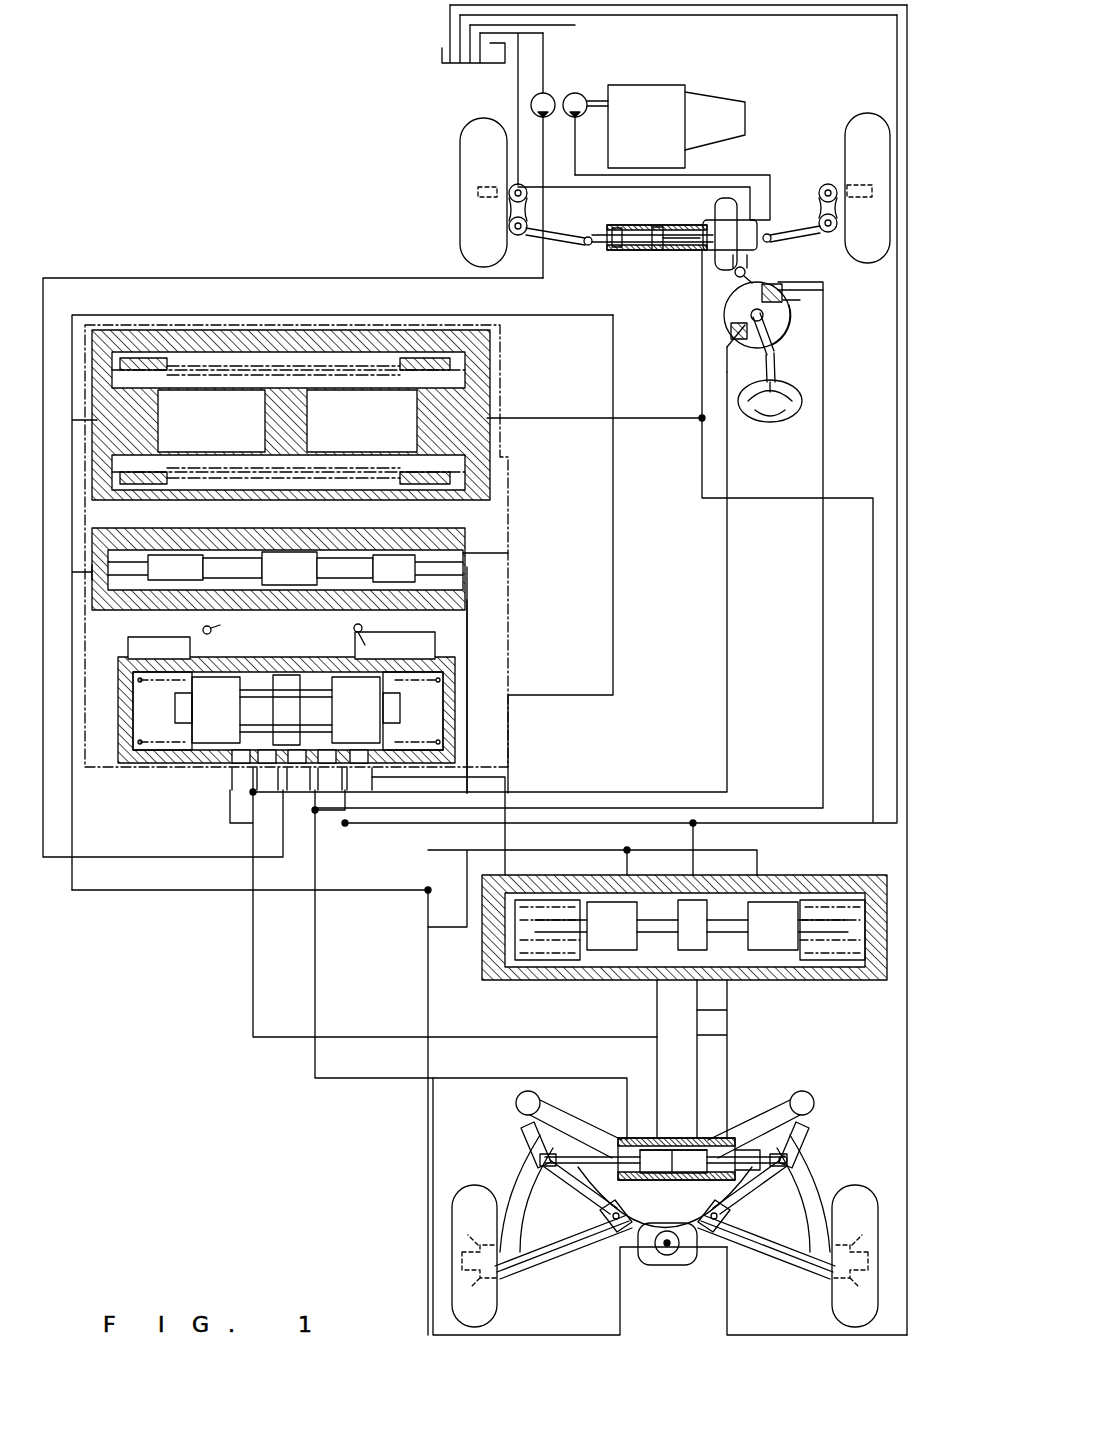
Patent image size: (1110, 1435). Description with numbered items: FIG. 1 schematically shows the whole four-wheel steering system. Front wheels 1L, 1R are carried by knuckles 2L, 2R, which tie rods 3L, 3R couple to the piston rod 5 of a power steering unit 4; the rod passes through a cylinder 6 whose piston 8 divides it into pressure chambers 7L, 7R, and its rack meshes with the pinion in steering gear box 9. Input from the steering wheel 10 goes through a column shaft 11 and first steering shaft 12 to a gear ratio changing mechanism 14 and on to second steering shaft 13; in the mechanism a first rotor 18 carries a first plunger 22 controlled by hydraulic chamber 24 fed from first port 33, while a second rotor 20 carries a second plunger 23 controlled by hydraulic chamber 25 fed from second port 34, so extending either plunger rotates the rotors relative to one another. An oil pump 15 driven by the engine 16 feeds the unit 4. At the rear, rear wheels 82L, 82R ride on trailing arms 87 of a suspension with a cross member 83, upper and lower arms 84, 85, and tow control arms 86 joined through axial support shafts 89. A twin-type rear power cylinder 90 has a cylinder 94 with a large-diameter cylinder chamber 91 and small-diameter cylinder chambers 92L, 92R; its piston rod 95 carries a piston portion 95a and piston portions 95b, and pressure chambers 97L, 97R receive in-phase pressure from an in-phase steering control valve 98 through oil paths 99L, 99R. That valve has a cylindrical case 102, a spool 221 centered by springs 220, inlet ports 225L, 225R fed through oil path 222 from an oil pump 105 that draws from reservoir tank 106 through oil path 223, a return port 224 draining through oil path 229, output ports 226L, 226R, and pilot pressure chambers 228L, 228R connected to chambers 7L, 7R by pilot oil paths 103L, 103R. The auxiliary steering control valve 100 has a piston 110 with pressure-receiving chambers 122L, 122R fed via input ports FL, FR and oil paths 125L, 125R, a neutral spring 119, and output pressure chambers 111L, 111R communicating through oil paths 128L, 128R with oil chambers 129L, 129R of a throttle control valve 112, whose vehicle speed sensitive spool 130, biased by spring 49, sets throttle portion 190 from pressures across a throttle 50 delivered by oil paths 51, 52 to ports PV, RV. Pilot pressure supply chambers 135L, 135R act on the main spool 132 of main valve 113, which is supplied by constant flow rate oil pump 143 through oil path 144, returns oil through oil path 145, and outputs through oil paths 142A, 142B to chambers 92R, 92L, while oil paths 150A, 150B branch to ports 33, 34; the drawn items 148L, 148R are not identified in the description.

The left front wheel 1L is at (460, 156).
The right front wheel 1R is at (860, 113).
The knuckle 2L is at (509, 212).
The knuckle 2R is at (822, 184).
The tie rod 3L is at (585, 235).
The tie rod 3R is at (810, 230).
The power steering unit 4 is at (762, 175).
The piston rod 5 is at (600, 245).
The cylinder 6 is at (635, 250).
The left pressure chamber 7L is at (625, 225).
The right pressure chamber 7R is at (658, 250).
The piston 8 is at (660, 262).
The steering gear box 9 is at (726, 198).
The steering wheel 10 is at (770, 422).
The column shaft 11 is at (776, 375).
The first steering shaft 12 is at (775, 340).
The second steering shaft 13 is at (765, 268).
The gear ratio changing mechanism 14 is at (792, 310).
The oil pump 15 is at (582, 94).
The engine 16 is at (660, 85).
The first rotor 18 is at (790, 328).
The second rotor 20 is at (730, 304).
The first plunger 22 is at (731, 330).
The second plunger 23 is at (790, 298).
The hydraulic chamber 24 is at (740, 340).
The hydraulic chamber 25 is at (790, 282).
The first port 33 is at (727, 370).
The second port 34 is at (778, 285).
The spring 49 is at (112, 610).
The throttle 50 is at (420, 905).
The oil path 51 is at (470, 678).
The oil path 52 is at (118, 890).
The left rear wheel 82L is at (492, 1305).
The right rear wheel 82R is at (838, 1305).
The cross member 83 is at (760, 1150).
The upper arm 84 is at (610, 1230).
The lower arm 85 is at (540, 1262).
The tow control arm 86 is at (525, 1135).
The trailing arm 87 is at (505, 1178).
The axial support shaft 89 is at (528, 1150).
The rear power cylinder 90 is at (777, 1155).
The large-diameter cylinder chamber 91 is at (695, 1138).
The small-diameter cylinder chamber 92L is at (615, 1165).
The small-diameter cylinder chamber 92R is at (755, 1168).
The cylinder 94 is at (665, 1197).
The piston rod 95 is at (600, 1140).
The piston portion 95a is at (700, 1148).
The piston portion 95b is at (640, 1148).
The left pressure chamber 97L is at (595, 1192).
The right pressure chamber 97R is at (738, 1192).
The in-phase steering control valve 98 is at (515, 980).
The oil path 99L is at (657, 1035).
The oil path 99R is at (710, 1035).
The auxiliary steering control valve 100 is at (310, 515).
The cylindrical case 102 is at (839, 1006).
The pilot oil path 103L is at (613, 670).
The pilot oil path 103R is at (702, 475).
The oil pump 105 is at (667, 1256).
The reservoir tank 106 is at (442, 63).
The piston 110 is at (292, 330).
The output pressure chamber 111L is at (152, 352).
The output pressure chamber 111R is at (460, 375).
The throttle control valve 112 is at (326, 546).
The main valve 113 is at (351, 686).
The neutral spring 119 is at (305, 490).
The pressure-receiving chamber 122L is at (211, 421).
The pressure-receiving chamber 122R is at (362, 421).
The oil path 125L is at (76, 325).
The oil path 125R is at (545, 418).
The oil path 128L is at (130, 555).
The oil path 128R is at (400, 555).
The oil chamber 129L is at (212, 555).
The oil chamber 129R is at (348, 555).
The vehicle speed sensitive spool 130 is at (463, 560).
The main spool 132 is at (287, 677).
The pilot pressure supply chamber 135L is at (150, 690).
The pilot pressure supply chamber 135R is at (415, 714).
The oil path 142A is at (253, 955).
The oil path 142B is at (315, 990).
The constant flow rate type oil pump 143 is at (531, 103).
The oil path 144 is at (290, 278).
The oil path 145 is at (360, 825).
The left solenoid 148L is at (220, 625).
The right solenoid 148R is at (394, 642).
The oil path 150A is at (596, 792).
The oil path 150B is at (823, 755).
The throttle portion 190 is at (282, 552).
The spring 220 is at (619, 929).
The spool 221 is at (575, 967).
The oil path 222 is at (620, 1318).
The oil path 223 is at (727, 1318).
The return port 224 is at (712, 875).
The inlet port 225L is at (625, 875).
The inlet port 225R is at (768, 875).
The output port 226L is at (640, 967).
The output port 226R is at (725, 967).
The pilot pressure chamber 228L is at (520, 930).
The pilot pressure chamber 228R is at (840, 893).
The oil path 229 is at (893, 470).
The left input port FL is at (59, 439).
The right input port FR is at (522, 401).
The port RV is at (60, 557).
The port PV is at (485, 673).